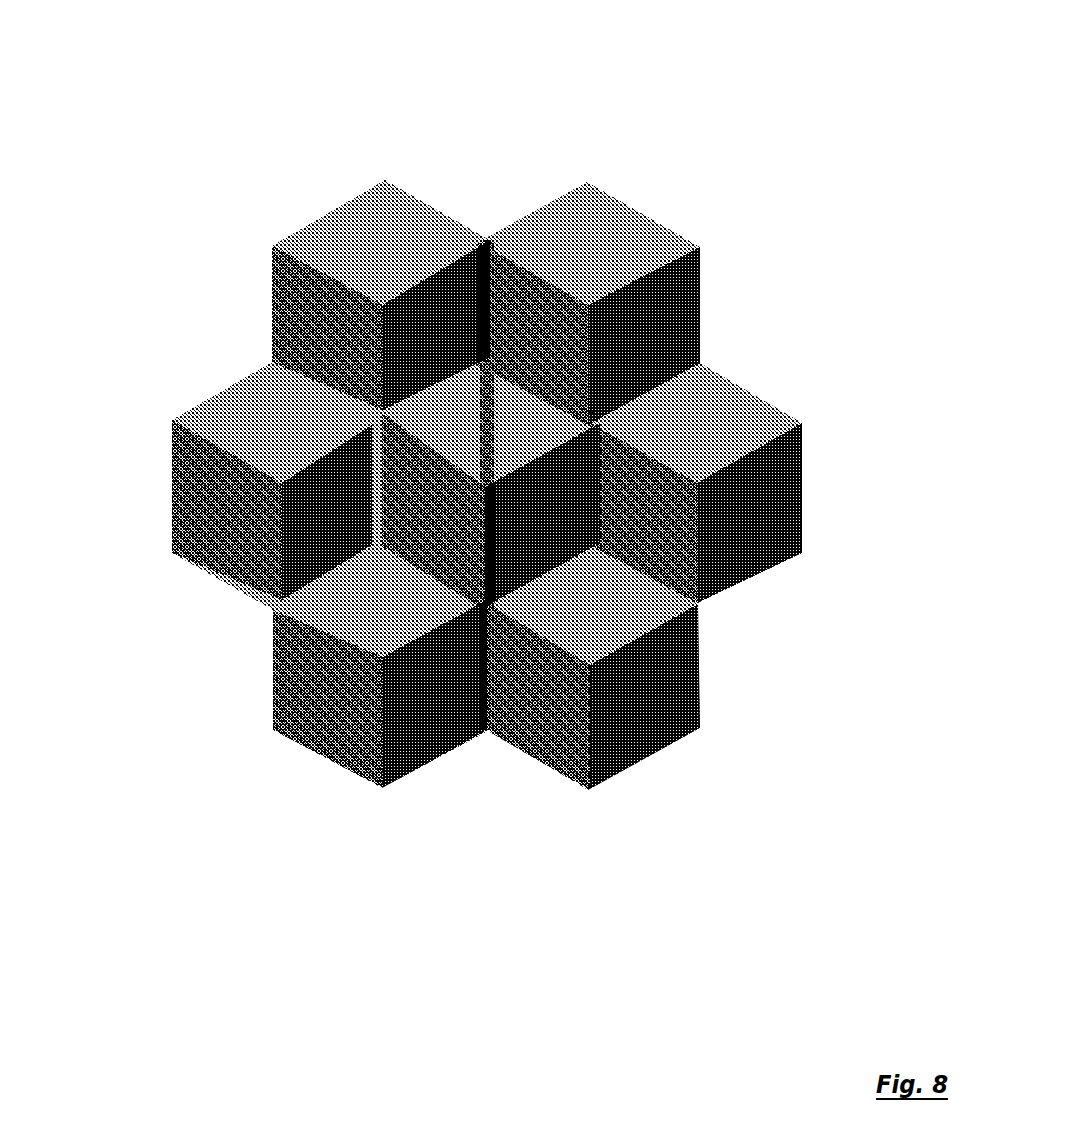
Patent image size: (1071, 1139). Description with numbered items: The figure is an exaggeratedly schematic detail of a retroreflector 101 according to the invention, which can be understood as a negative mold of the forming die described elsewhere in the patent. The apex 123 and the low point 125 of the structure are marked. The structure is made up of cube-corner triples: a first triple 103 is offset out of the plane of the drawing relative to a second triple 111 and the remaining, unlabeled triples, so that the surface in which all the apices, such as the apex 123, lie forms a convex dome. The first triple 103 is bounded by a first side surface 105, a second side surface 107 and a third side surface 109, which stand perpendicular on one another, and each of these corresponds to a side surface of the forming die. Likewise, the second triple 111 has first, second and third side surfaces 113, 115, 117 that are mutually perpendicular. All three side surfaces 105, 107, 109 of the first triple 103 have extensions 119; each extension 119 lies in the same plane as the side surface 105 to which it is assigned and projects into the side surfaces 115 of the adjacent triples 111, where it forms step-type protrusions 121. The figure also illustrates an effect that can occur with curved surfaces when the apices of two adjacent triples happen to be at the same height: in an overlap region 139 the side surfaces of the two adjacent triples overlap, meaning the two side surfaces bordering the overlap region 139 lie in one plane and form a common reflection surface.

The retroreflector 101 is at (438, 505).
The first triple 103 is at (427, 272).
The first side surface of the first triple 105 is at (364, 462).
The second side surface of the first triple 107 is at (725, 592).
The third side surface of the first triple 109 is at (468, 240).
The second triple 111 is at (248, 637).
The first side surface of the second triple 113 is at (487, 778).
The second side surface of the second triple 115 is at (447, 757).
The third side surface of the second triple 117 is at (333, 592).
The extension 119 is at (627, 770).
The step-type protrusion 121 is at (545, 767).
The apex 123 is at (490, 478).
The low point 125 is at (250, 481).
The overlap region 139 is at (668, 757).